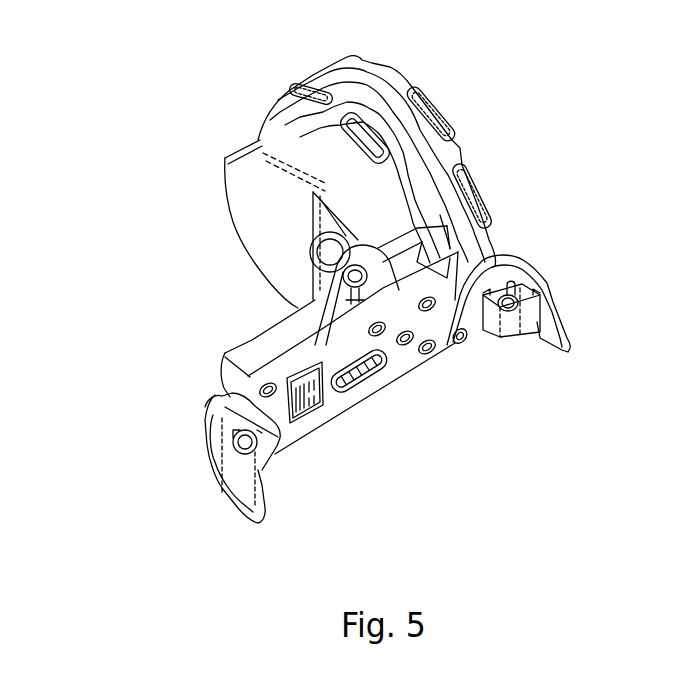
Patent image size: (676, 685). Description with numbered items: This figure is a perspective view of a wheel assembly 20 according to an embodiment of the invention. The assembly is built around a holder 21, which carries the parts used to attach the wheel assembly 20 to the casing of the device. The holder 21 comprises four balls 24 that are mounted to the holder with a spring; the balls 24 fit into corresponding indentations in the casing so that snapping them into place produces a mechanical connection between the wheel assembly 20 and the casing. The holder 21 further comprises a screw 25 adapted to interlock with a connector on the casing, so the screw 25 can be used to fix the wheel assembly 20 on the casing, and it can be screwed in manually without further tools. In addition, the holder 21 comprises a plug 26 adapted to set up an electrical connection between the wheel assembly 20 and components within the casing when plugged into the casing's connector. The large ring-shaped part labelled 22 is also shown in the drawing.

The wheel assembly 20 is at (100, 60).
The holder 21 is at (333, 408).
The ring 22 is at (404, 124).
The balls 24 is at (507, 301).
The screw 25 is at (320, 254).
The plug 26 is at (368, 377).